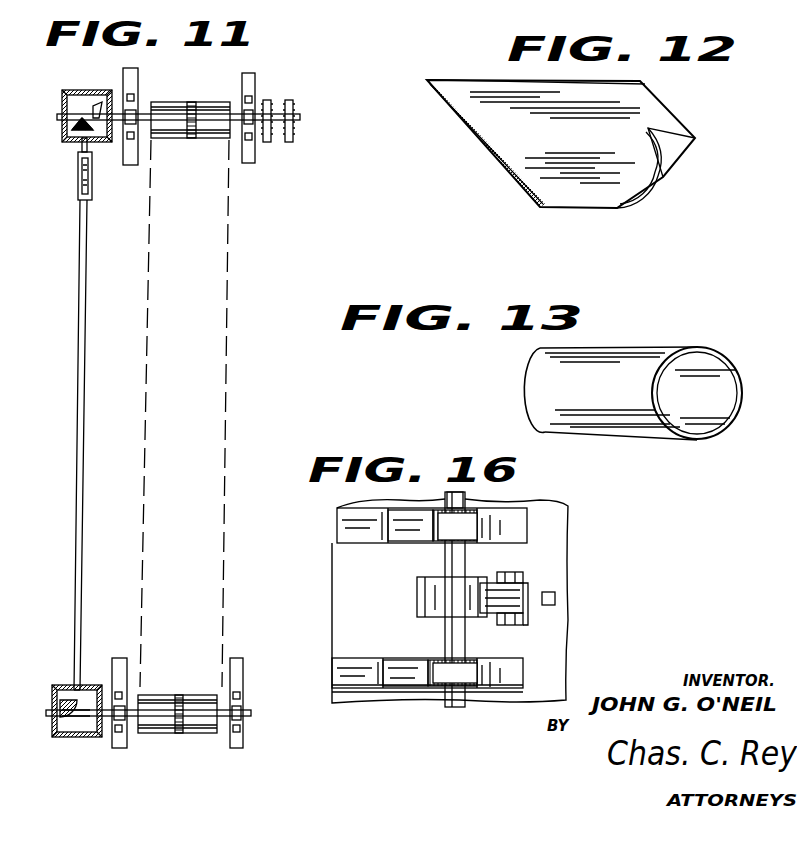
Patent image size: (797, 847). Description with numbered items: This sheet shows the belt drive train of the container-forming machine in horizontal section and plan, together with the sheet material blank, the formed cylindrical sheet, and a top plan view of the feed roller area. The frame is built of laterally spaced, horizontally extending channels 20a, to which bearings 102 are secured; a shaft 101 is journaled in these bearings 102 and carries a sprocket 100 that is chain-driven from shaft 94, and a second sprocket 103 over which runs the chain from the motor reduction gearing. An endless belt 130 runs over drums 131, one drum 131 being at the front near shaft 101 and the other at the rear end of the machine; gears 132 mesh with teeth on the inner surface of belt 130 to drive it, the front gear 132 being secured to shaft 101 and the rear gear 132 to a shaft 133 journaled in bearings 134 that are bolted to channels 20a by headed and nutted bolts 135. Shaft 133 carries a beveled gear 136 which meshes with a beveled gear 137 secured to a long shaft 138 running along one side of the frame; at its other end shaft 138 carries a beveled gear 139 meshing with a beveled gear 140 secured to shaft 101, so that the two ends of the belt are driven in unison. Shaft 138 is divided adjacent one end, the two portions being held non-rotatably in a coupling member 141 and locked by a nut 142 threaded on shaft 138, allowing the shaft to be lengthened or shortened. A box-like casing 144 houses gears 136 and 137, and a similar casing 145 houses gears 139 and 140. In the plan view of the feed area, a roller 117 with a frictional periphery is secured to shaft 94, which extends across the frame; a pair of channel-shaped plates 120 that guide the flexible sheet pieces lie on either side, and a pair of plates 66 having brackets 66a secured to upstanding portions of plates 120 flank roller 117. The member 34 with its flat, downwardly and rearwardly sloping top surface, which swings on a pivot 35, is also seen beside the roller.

In FIG. 11, the shaft 101 is at (240, 112).
In FIG. 11, the beveled gear 140 is at (96, 104).
In FIG. 11, the casing 145 is at (95, 92).
In FIG. 11, the beveled gear 139 is at (72, 138).
In FIG. 11, the nut 142 is at (82, 160).
In FIG. 11, the coupling member 141 is at (78, 190).
In FIG. 11, the shaft 138 is at (78, 415).
In FIG. 11, the bearings 102 is at (140, 133).
In FIG. 11, the drums 131 is at (195, 103).
In FIG. 11, the gear 132 is at (191, 138).
In FIG. 11, the second sprocket 103 is at (268, 100).
In FIG. 11, the sprocket 100 is at (293, 105).
In FIG. 11, the endless belt 130 is at (230, 250).
In FIG. 11, the shaft 133 is at (251, 713).
In FIG. 11, the beveled gear 136 is at (78, 737).
In FIG. 11, the beveled gear 137 is at (52, 702).
In FIG. 11, the casing 144 is at (70, 684).
In FIG. 11, the bearings 134 is at (118, 690).
In FIG. 11, the channels 20a is at (127, 676).
In FIG. 11, the bolts 135 is at (118, 748).
In FIG. 16, the shaft 94 is at (465, 500).
In FIG. 16, the plates 120 is at (347, 525).
In FIG. 16, the plates 66 is at (410, 532).
In FIG. 16, the brackets 66a is at (460, 518).
In FIG. 16, the roller 117 is at (417, 600).
In FIG. 16, the member 34 is at (523, 588).
In FIG. 16, the pivot 35 is at (518, 628).